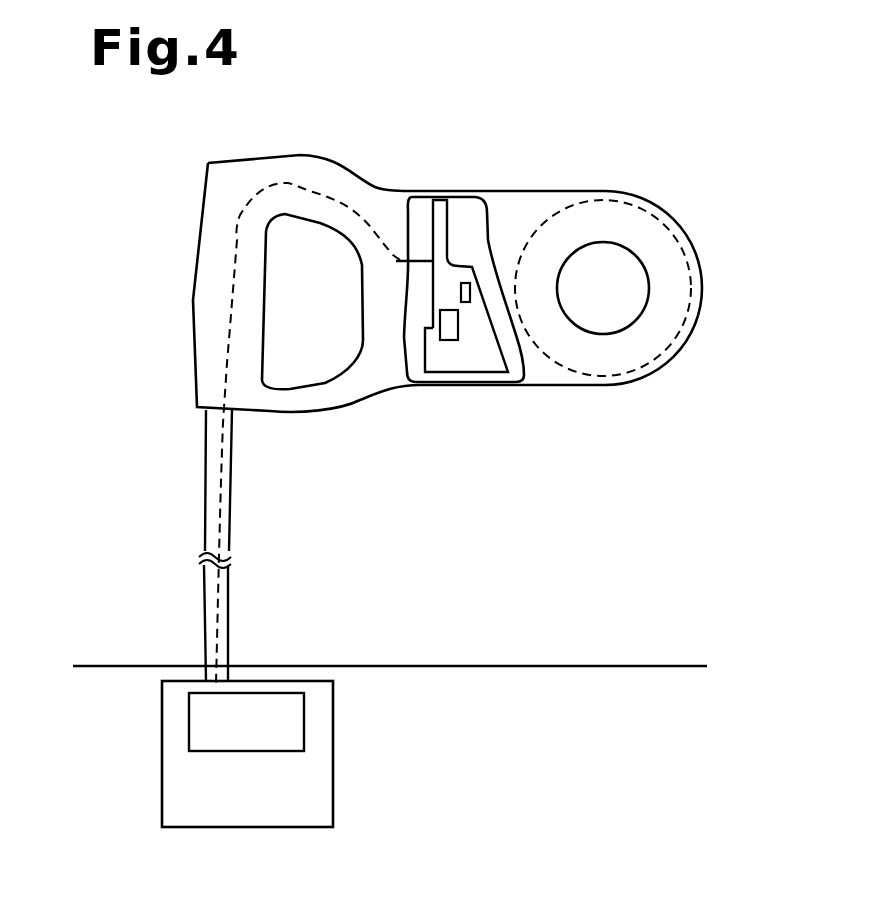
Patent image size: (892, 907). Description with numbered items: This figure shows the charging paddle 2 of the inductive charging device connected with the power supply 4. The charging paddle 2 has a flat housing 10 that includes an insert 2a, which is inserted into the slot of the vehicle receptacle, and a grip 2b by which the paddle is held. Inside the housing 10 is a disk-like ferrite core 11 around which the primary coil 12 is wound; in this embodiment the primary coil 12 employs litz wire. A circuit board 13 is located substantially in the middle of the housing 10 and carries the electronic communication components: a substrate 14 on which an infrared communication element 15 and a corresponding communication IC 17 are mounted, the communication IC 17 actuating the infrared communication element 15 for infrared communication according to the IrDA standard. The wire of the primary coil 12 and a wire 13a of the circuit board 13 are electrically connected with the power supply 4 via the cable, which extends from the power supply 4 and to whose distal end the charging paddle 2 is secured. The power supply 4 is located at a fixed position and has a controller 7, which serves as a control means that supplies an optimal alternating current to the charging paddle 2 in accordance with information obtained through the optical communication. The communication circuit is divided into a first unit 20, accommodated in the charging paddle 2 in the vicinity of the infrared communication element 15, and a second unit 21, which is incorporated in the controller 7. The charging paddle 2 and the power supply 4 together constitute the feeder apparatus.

The charging paddle 2 is at (442, 404).
The insert 2a is at (537, 191).
The grip 2b is at (196, 285).
The power supply 4 is at (497, 666).
The controller 7 is at (275, 754).
The housing 10 is at (430, 390).
The ferrite core 11 is at (640, 283).
The primary coil 12 is at (685, 323).
The circuit board 13 is at (523, 380).
The wire 13a is at (237, 240).
The substrate 14 is at (443, 213).
The infrared communication element 15 is at (467, 282).
The communication IC 17 is at (439, 336).
The first unit 20 is at (477, 352).
The second unit 21 is at (231, 738).